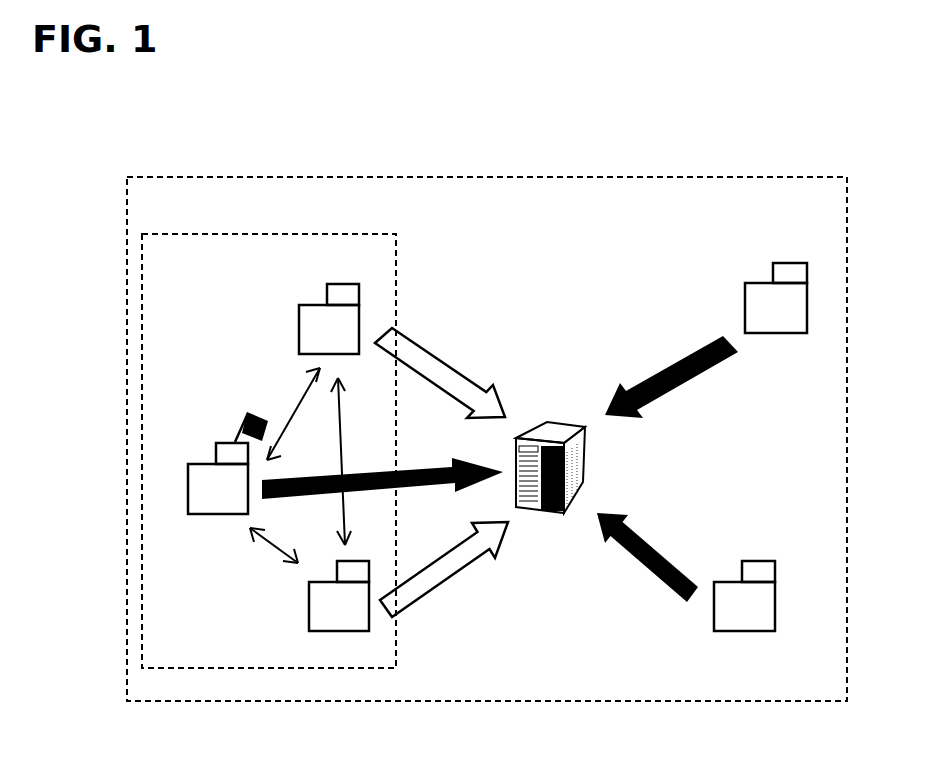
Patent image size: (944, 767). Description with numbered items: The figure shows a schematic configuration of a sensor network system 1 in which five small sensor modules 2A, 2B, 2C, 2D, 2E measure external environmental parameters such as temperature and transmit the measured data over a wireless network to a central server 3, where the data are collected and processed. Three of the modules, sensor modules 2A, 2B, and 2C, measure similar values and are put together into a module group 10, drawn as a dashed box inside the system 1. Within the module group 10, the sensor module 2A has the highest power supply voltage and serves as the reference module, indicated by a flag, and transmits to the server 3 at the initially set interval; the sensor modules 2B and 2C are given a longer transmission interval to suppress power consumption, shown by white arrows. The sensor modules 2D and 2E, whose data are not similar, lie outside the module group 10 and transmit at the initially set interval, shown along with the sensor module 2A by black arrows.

The sensor network system 1 is at (806, 701).
The module group 10 is at (397, 252).
The sensor module 2A is at (203, 514).
The sensor module 2B is at (298, 330).
The sensor module 2C is at (309, 608).
The sensor module 2D is at (800, 333).
The sensor module 2E is at (763, 631).
The server 3 is at (560, 512).